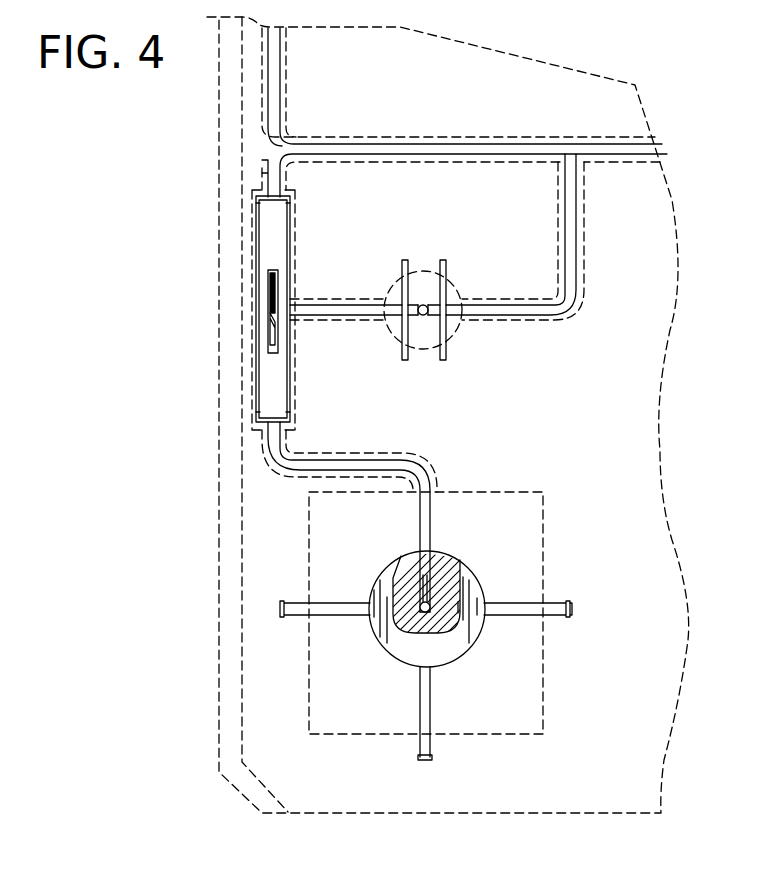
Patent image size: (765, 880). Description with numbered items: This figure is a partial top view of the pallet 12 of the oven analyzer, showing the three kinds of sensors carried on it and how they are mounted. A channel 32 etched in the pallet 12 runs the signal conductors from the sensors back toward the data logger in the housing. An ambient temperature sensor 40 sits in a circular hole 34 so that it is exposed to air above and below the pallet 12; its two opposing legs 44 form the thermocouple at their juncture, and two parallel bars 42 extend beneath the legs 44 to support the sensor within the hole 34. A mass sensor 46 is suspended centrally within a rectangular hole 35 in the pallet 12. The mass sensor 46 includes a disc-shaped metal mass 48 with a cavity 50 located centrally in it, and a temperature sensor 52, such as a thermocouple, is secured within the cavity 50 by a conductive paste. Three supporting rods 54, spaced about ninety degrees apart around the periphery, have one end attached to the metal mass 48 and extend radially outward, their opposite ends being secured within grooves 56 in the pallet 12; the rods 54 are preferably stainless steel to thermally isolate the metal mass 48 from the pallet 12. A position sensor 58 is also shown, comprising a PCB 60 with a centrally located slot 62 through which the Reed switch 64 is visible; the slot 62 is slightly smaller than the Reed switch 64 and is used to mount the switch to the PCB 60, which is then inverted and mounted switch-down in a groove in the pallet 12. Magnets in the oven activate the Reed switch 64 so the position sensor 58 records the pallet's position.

The pallet 12 is at (555, 95).
The position sensor 58 is at (212, 234).
The channel 32 is at (575, 228).
The leg 44 is at (333, 318).
The parallel bar 42 is at (407, 263).
The ambient temperature sensor 40 is at (423, 316).
The circular hole 34 is at (392, 322).
The PCB 60 is at (268, 373).
The Reed switch 64 is at (270, 295).
The slot 62 is at (270, 336).
The rectangular hole 35 is at (463, 490).
The mass sensor 46 is at (429, 644).
The metal mass 48 is at (405, 653).
The cavity 50 is at (440, 575).
The temperature sensor 52 is at (422, 605).
The supporting rod 54 is at (297, 618).
The groove 56 is at (568, 614).